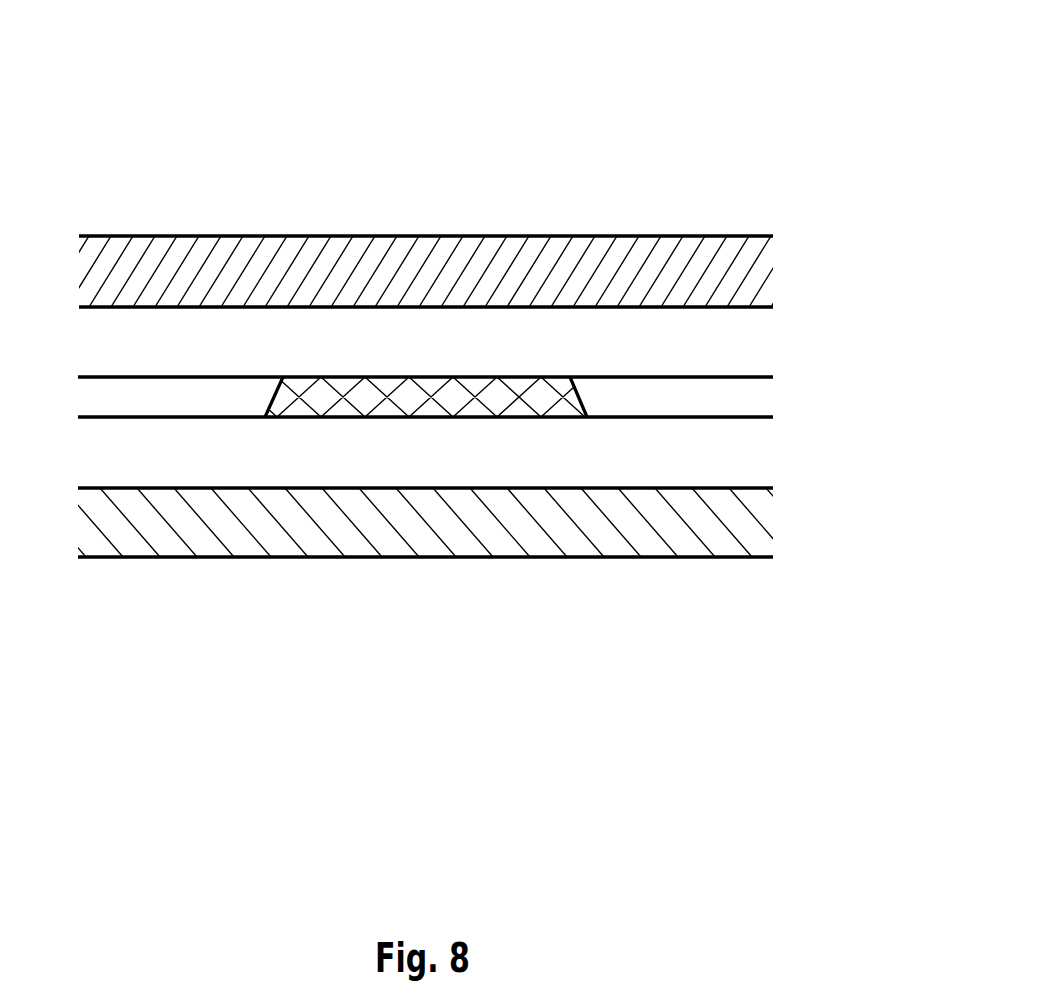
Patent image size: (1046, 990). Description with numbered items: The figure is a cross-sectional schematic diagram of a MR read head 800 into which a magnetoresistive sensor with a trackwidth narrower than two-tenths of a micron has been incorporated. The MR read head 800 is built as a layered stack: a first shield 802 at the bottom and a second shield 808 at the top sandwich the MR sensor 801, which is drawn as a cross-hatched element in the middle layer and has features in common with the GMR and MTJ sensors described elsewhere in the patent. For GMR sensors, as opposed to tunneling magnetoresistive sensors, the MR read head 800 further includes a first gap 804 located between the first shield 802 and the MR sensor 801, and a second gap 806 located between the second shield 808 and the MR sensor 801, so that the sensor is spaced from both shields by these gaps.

The MR read head 800 is at (665, 120).
The second shield 808 is at (722, 277).
The second gap 806 is at (720, 342).
The MR sensor 801 is at (545, 399).
The first gap 804 is at (702, 463).
The first shield 802 is at (718, 515).